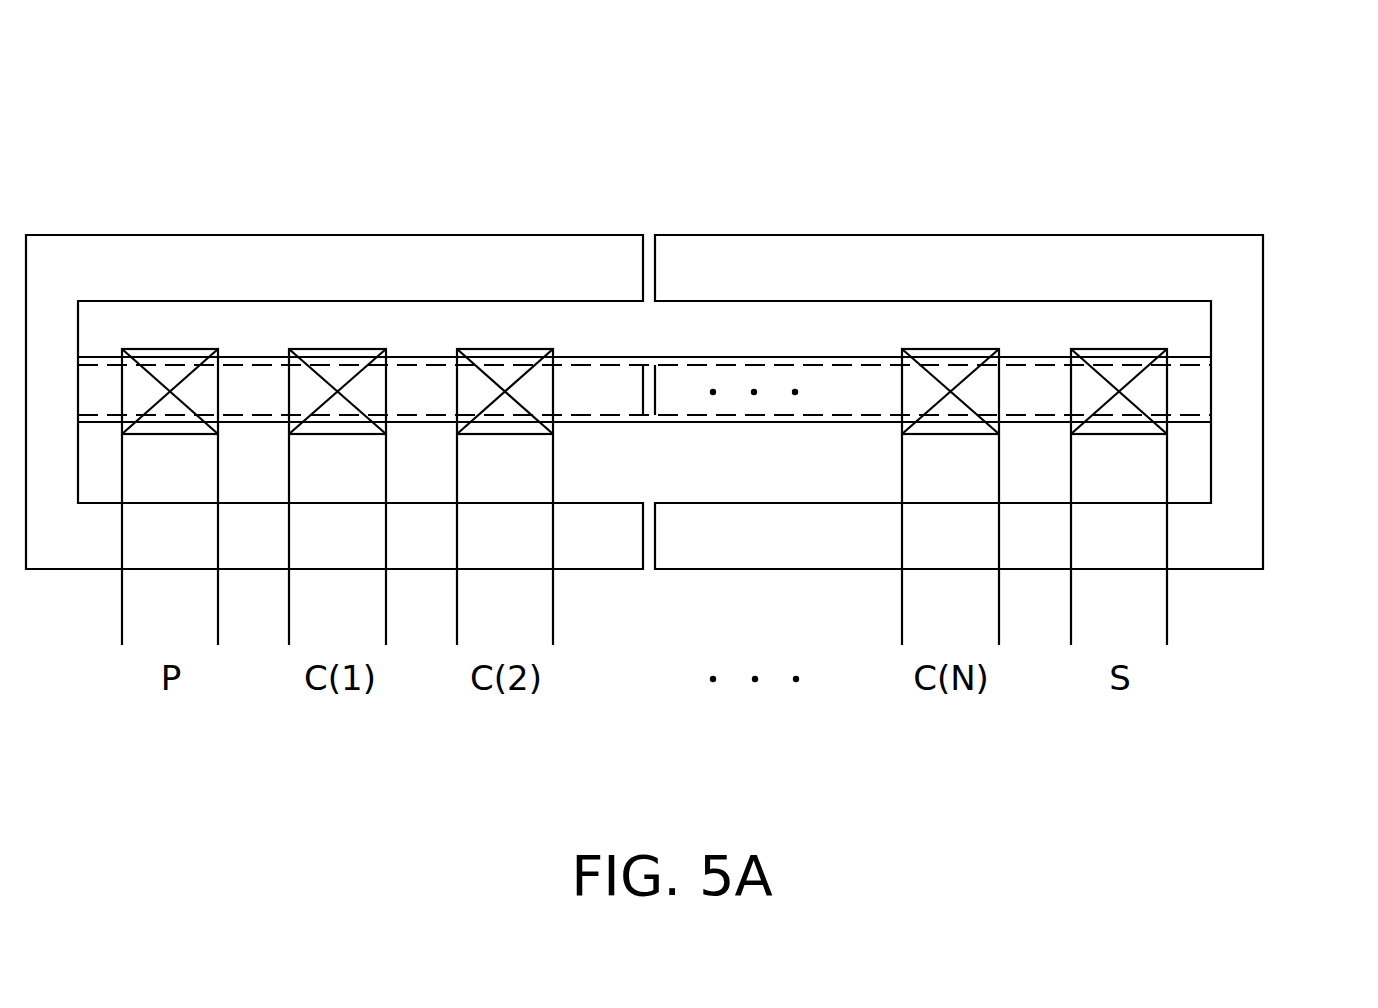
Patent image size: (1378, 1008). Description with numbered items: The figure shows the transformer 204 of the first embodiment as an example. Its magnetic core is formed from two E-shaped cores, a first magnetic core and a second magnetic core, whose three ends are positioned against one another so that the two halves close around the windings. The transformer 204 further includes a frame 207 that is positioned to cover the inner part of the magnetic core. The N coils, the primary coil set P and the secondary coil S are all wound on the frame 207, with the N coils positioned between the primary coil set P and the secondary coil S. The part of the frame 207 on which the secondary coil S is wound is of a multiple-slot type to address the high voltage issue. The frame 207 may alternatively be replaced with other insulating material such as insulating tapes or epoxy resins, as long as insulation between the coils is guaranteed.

The transformer 204 is at (1326, 90).
The frame 207 is at (1202, 355).